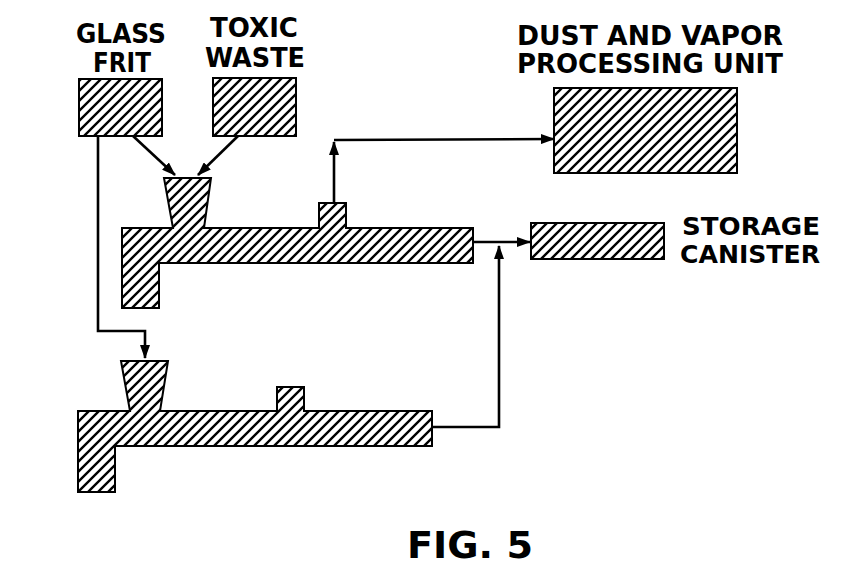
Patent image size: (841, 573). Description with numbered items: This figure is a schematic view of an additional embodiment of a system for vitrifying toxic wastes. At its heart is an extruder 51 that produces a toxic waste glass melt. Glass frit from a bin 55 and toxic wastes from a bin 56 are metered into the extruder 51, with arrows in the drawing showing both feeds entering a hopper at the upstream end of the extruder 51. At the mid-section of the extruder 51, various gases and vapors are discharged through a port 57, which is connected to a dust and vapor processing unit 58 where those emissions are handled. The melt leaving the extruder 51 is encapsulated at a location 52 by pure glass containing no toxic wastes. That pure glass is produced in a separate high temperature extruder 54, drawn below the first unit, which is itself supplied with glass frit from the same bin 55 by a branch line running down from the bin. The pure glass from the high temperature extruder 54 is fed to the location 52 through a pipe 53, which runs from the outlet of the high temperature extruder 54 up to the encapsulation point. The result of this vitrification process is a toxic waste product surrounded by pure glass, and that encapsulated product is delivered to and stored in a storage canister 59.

The extruder 51 is at (246, 242).
The location 52 is at (498, 240).
The pipe 53 is at (500, 353).
The high temperature extruder 54 is at (203, 425).
The bin 55 is at (95, 107).
The bin 56 is at (287, 92).
The port 57 is at (344, 203).
The dust and vapor processing unit 58 is at (716, 148).
The storage canister 59 is at (592, 250).